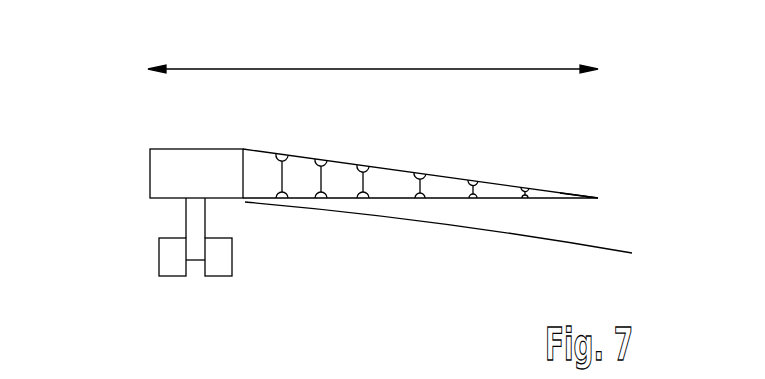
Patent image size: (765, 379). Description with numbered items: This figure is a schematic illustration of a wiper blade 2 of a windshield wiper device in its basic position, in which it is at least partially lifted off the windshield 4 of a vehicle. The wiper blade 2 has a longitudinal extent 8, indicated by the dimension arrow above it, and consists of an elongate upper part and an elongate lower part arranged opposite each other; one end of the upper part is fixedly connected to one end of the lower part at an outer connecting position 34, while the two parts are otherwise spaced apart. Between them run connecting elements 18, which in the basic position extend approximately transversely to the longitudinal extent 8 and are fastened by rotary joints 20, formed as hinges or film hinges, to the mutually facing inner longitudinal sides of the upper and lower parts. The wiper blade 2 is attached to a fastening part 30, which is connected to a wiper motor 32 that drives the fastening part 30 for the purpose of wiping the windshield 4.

The wiper blade 2 is at (570, 146).
The windshield 4 is at (582, 244).
The longitudinal extent 8 is at (370, 68).
The connecting elements 18 is at (292, 158).
The rotary joints 20 is at (283, 158).
The fastening part 30 is at (160, 172).
The wiper motor 32 is at (168, 257).
The outer connecting position 34 is at (598, 197).